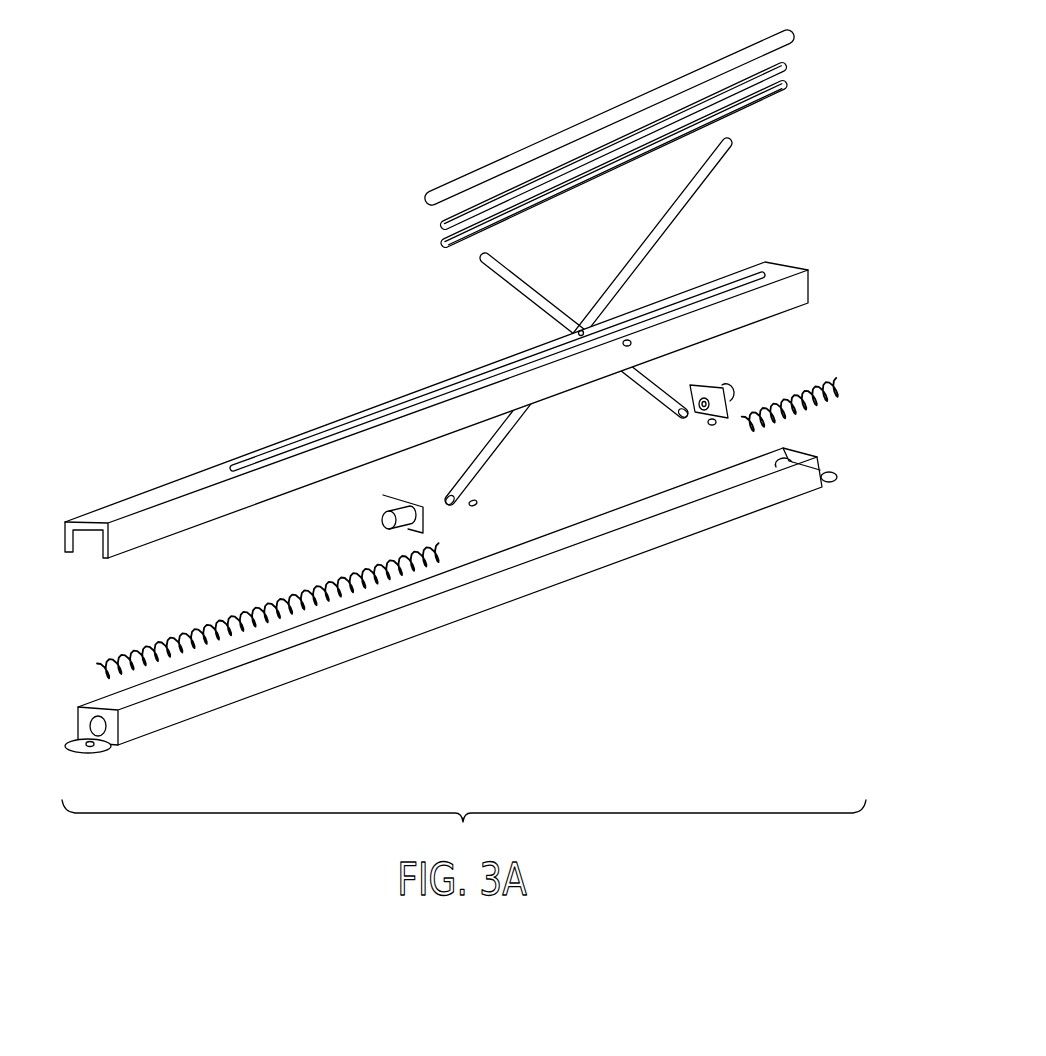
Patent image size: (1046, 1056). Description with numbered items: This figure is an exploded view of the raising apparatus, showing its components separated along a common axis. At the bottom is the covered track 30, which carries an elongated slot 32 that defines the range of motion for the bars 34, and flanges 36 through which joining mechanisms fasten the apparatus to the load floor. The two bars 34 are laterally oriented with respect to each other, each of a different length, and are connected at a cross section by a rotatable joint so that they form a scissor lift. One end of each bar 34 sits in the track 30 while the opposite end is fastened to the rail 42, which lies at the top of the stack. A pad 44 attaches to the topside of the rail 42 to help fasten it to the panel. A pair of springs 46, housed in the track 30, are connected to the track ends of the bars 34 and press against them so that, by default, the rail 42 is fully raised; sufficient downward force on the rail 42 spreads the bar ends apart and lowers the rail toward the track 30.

The covered track 30 is at (142, 498).
The elongated slot 32 is at (310, 442).
The bars 34 is at (688, 190).
The flanges 36 is at (102, 744).
The rail 42 is at (443, 248).
The pad 44 is at (703, 66).
The springs 46 is at (290, 587).